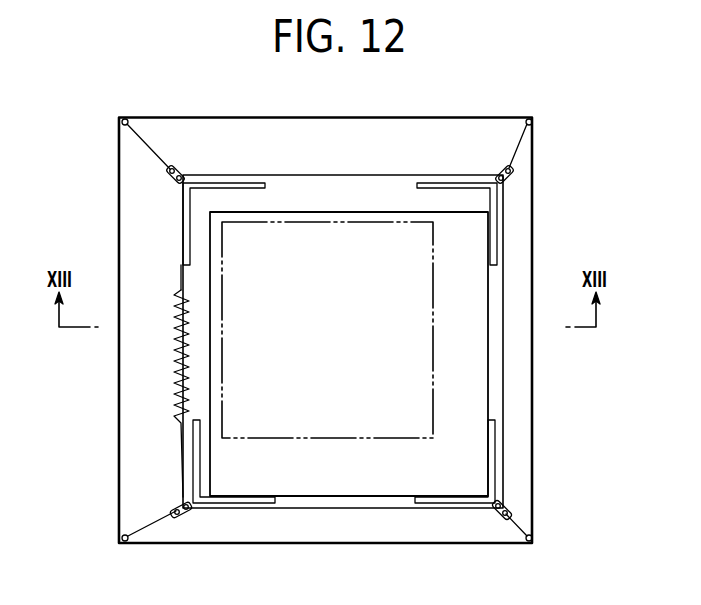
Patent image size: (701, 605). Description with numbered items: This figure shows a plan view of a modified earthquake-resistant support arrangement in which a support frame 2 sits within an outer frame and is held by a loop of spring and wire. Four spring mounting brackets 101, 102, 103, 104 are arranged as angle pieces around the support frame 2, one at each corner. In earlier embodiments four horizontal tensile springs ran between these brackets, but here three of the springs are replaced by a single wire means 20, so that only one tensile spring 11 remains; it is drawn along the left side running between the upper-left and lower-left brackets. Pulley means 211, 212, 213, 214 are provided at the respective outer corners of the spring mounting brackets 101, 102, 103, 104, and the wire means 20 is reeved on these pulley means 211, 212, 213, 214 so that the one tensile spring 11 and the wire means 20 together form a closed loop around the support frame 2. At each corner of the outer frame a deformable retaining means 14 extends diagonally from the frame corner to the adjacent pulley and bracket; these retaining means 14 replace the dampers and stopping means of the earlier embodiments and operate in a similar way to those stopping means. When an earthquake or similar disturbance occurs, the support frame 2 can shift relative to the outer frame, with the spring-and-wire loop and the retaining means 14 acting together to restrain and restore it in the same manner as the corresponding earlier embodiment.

The support frame 2 is at (338, 338).
The tensile spring 11 is at (176, 380).
The retaining means 14 is at (149, 143).
The wire means 20 is at (183, 250).
The spring mounting bracket 101 is at (452, 504).
The spring mounting bracket 102 is at (433, 183).
The spring mounting bracket 103 is at (243, 183).
The spring mounting bracket 104 is at (250, 504).
The pulley means 211 is at (504, 517).
The pulley means 212 is at (497, 170).
The pulley means 213 is at (184, 170).
The pulley means 214 is at (182, 516).